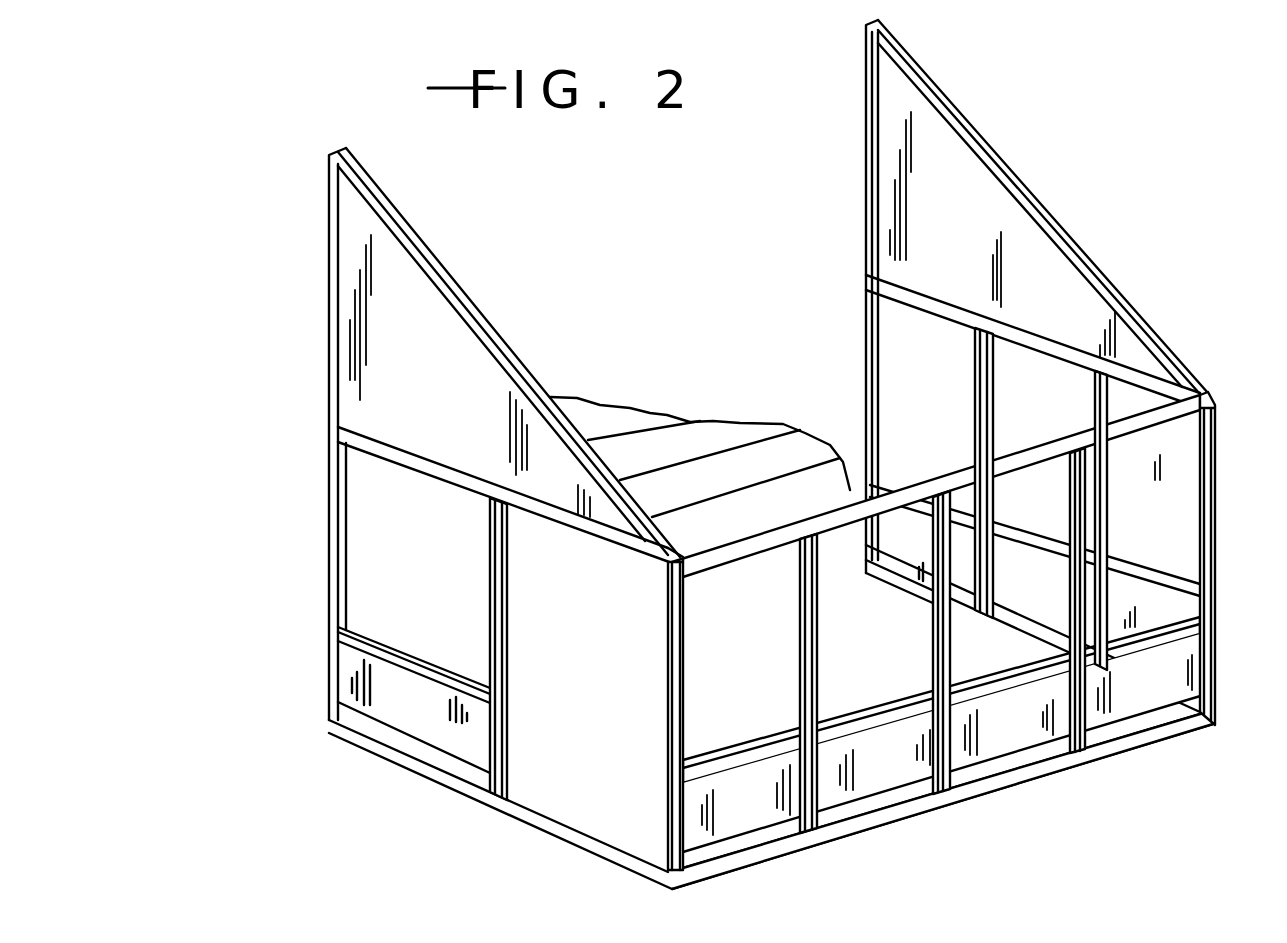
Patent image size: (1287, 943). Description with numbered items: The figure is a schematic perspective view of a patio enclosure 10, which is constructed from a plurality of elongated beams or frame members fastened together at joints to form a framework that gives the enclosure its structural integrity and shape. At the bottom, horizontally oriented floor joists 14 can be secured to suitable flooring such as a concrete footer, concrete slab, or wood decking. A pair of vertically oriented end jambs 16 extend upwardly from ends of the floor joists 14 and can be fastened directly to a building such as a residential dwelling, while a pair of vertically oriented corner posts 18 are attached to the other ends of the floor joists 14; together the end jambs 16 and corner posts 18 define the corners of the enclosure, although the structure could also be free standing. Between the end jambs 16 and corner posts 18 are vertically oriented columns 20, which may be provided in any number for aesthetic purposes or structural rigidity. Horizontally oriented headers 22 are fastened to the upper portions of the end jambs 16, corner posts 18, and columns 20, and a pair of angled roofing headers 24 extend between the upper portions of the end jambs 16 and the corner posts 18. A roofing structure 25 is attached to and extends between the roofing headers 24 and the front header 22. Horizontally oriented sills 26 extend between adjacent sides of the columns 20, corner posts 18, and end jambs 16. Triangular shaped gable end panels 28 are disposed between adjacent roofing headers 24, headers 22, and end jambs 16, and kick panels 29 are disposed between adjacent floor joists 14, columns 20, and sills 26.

The patio enclosure 10 is at (1130, 162).
The floor joists 14 is at (500, 813).
The end jambs 16 is at (330, 512).
The corner posts 18 is at (683, 655).
The columns 20 is at (507, 627).
The headers 22 is at (445, 477).
The roofing headers 24 is at (450, 302).
The roofing structure 25 is at (685, 430).
The sills 26 is at (415, 655).
The gable end panels 28 is at (462, 412).
The kick panels 29 is at (417, 707).